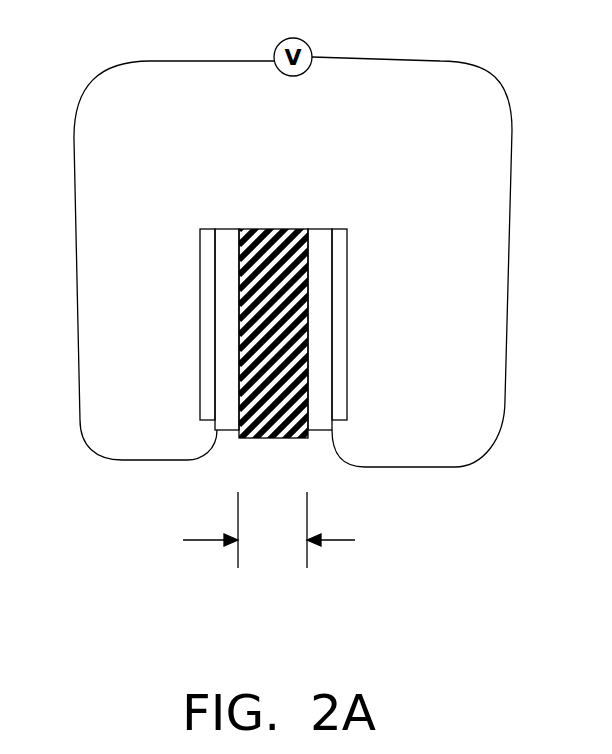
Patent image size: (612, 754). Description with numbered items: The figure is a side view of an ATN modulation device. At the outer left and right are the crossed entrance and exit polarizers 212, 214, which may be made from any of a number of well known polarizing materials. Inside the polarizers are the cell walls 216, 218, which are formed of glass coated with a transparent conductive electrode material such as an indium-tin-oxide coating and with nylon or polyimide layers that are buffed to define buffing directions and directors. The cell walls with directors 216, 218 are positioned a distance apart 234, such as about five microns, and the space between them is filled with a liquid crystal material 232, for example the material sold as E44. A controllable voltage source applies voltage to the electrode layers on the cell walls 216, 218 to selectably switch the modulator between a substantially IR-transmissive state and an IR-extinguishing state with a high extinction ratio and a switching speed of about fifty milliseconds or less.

The entrance polarizer 212 is at (207, 229).
The exit polarizer 214 is at (345, 229).
The cell wall 216 is at (230, 240).
The cell wall 218 is at (319, 235).
The liquid crystal material 232 is at (285, 438).
The distance apart 234 is at (276, 557).